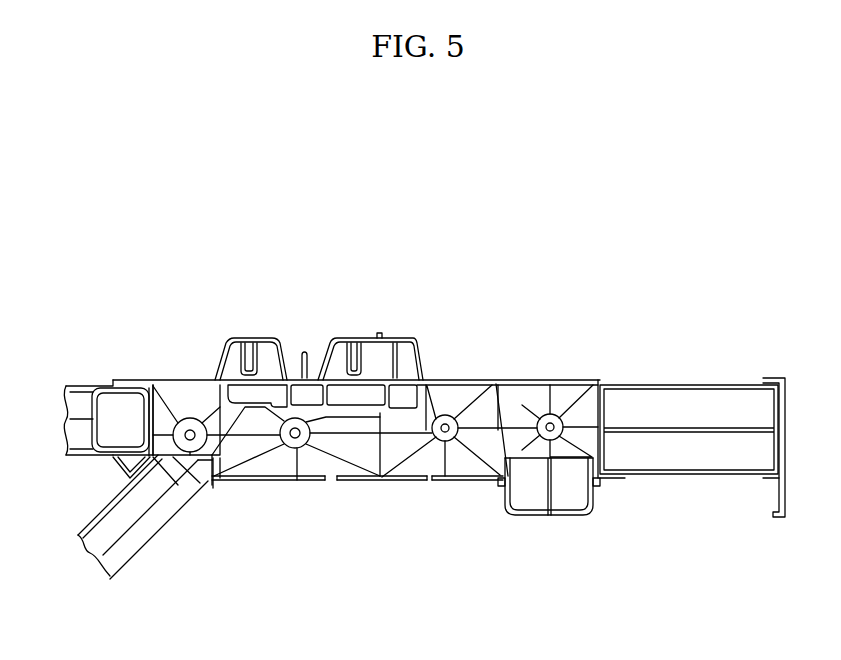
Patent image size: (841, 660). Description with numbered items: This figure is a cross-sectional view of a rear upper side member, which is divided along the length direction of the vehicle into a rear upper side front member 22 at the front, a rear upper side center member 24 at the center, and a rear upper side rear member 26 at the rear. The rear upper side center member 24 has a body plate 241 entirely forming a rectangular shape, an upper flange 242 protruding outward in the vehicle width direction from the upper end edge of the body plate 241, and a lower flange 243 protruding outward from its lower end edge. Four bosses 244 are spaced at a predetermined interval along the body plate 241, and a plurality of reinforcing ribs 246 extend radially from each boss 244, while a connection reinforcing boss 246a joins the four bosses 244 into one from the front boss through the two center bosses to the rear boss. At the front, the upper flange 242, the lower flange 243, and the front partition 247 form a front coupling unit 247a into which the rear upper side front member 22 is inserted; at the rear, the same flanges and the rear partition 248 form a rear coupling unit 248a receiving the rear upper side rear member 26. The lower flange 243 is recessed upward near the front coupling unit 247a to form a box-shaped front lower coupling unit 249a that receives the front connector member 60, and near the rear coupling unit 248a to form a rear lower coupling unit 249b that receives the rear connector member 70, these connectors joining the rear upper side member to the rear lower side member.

The rear upper side front member 22 is at (103, 384).
The front partition 247 is at (147, 402).
The front coupling unit 247a is at (101, 435).
The upper flange 242 is at (188, 382).
The body plate 241 is at (442, 390).
The rear upper side center member 24 is at (468, 367).
The connection reinforcing boss 246a is at (518, 427).
The rear partition 248 is at (601, 402).
The rear coupling unit 248a is at (615, 465).
The rear upper side rear member 26 is at (727, 385).
The lower flange 243 is at (243, 481).
The boss 244 is at (300, 481).
The reinforcing rib 246 is at (350, 481).
The rear lower coupling unit 249b is at (530, 498).
The rear connector member 70 is at (568, 516).
The front lower coupling unit 249a is at (137, 507).
The front connector member 60 is at (133, 563).